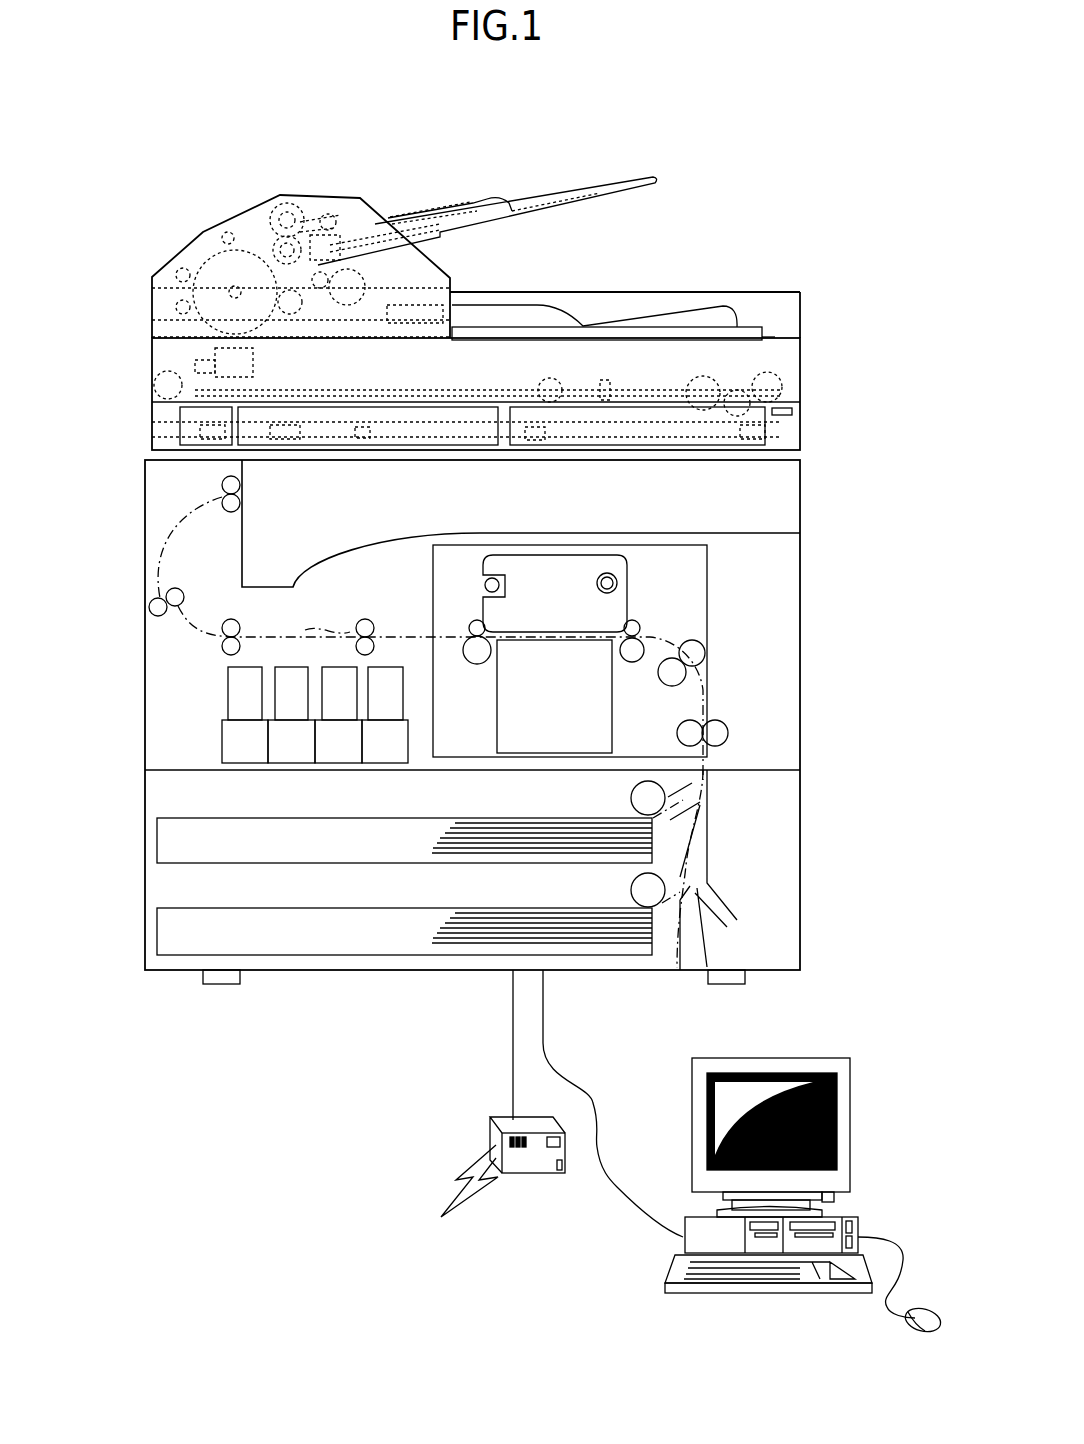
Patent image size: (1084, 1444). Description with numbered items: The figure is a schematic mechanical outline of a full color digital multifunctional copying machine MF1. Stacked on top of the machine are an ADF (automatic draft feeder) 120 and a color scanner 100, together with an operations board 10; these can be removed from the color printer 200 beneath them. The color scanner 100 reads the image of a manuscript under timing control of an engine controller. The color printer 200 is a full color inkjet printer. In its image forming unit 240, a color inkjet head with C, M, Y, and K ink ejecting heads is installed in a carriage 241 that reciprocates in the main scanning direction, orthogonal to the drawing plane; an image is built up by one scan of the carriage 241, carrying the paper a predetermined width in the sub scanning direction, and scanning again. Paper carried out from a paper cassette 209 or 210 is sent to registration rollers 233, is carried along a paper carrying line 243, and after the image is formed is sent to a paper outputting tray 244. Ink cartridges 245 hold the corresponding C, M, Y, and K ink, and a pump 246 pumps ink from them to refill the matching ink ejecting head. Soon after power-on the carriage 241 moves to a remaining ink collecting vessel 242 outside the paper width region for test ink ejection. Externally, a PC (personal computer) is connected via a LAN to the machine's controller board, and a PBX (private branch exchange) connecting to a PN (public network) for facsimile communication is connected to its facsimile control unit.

The multifunctional copying machine MF1 is at (497, 184).
The ADF (automatic draft feeder) 120 is at (136, 266).
The color scanner 100 is at (138, 370).
The operations board 10 is at (780, 430).
The color printer 200 is at (133, 588).
The paper outputting tray 244 is at (470, 531).
The paper carrying line 243 is at (308, 630).
The ink cartridges 245 is at (208, 684).
The pump 246 is at (208, 731).
The image forming unit 240 is at (707, 602).
The carriage 241 is at (627, 593).
The remaining ink collecting vessel 242 is at (610, 700).
The registration rollers 233 is at (699, 647).
The paper cassette 209 is at (340, 853).
The paper cassette 210 is at (340, 945).
The PBX (private branch exchange) PBX is at (517, 1173).
The PN (public network) PN is at (460, 1196).
The PC (personal computer) PC is at (807, 1043).